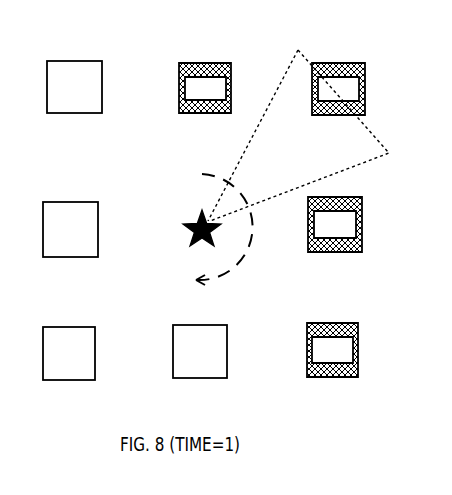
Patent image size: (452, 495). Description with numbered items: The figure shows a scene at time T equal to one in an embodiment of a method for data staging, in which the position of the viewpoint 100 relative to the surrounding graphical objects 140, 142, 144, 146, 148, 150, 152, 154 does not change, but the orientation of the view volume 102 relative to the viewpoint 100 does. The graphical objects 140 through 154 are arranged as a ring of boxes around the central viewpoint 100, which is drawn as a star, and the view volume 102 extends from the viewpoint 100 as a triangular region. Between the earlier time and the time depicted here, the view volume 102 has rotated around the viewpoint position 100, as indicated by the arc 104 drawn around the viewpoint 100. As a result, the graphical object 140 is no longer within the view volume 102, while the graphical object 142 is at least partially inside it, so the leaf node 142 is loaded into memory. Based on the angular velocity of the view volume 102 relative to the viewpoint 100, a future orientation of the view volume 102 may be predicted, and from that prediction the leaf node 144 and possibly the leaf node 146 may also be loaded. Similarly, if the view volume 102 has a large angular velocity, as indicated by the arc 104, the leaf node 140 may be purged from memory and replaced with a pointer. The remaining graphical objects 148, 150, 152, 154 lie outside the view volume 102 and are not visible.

The viewpoint position 100 is at (192, 243).
The view volume 102 is at (252, 133).
The arc 104 is at (243, 257).
The graphical object 140 is at (205, 88).
The graphical object 142 is at (338, 89).
The graphical object 144 is at (335, 224).
The graphical object 146 is at (332, 350).
The graphical object 148 is at (200, 351).
The graphical object 150 is at (69, 353).
The graphical object 152 is at (70, 229).
The graphical object 154 is at (74, 87).